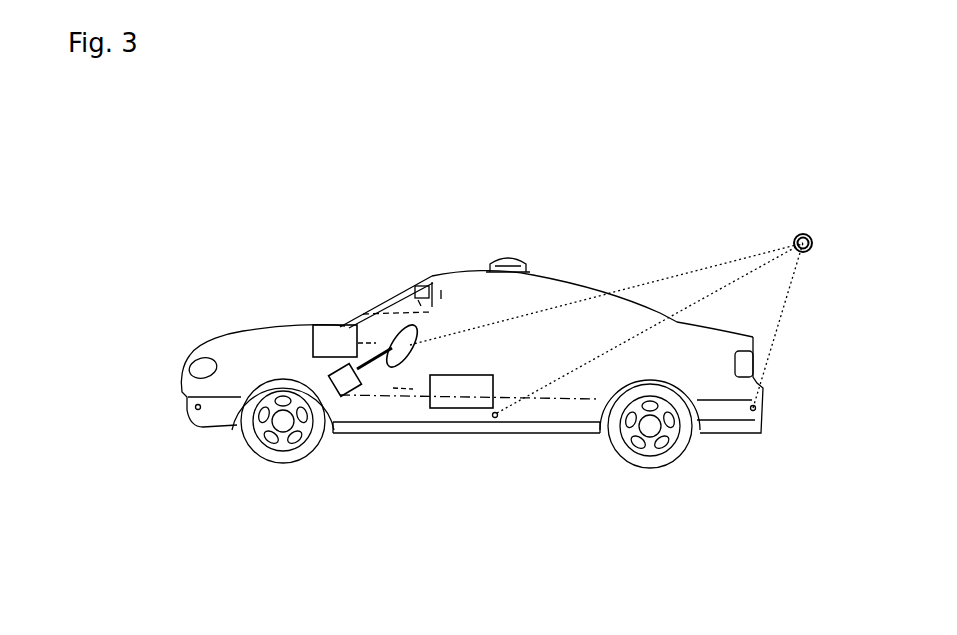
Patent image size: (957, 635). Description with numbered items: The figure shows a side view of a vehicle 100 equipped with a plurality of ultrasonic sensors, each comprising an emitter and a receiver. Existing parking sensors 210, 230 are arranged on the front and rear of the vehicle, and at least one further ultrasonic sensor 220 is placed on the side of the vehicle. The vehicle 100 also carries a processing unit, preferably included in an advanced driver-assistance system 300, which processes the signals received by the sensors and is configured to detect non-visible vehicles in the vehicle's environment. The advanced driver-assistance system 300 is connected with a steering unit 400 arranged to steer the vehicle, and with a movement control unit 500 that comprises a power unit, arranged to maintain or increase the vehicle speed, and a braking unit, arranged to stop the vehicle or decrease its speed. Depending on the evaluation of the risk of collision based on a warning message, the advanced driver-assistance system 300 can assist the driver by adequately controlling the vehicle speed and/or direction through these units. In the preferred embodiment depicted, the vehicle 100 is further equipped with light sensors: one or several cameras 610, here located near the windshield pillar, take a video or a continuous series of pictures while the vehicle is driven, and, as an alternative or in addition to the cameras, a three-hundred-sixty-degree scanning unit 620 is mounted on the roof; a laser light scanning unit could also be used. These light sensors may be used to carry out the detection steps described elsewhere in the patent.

The vehicle 100 is at (240, 328).
The parking sensor 210 is at (200, 413).
The ultrasonic sensor 220 is at (497, 418).
The parking sensor 230 is at (755, 411).
The advanced driver-assistance system 300 is at (337, 337).
The steering unit 400 is at (343, 391).
The movement control unit 500 is at (462, 408).
The camera 610 is at (437, 274).
The 360° scanning unit 620 is at (520, 258).